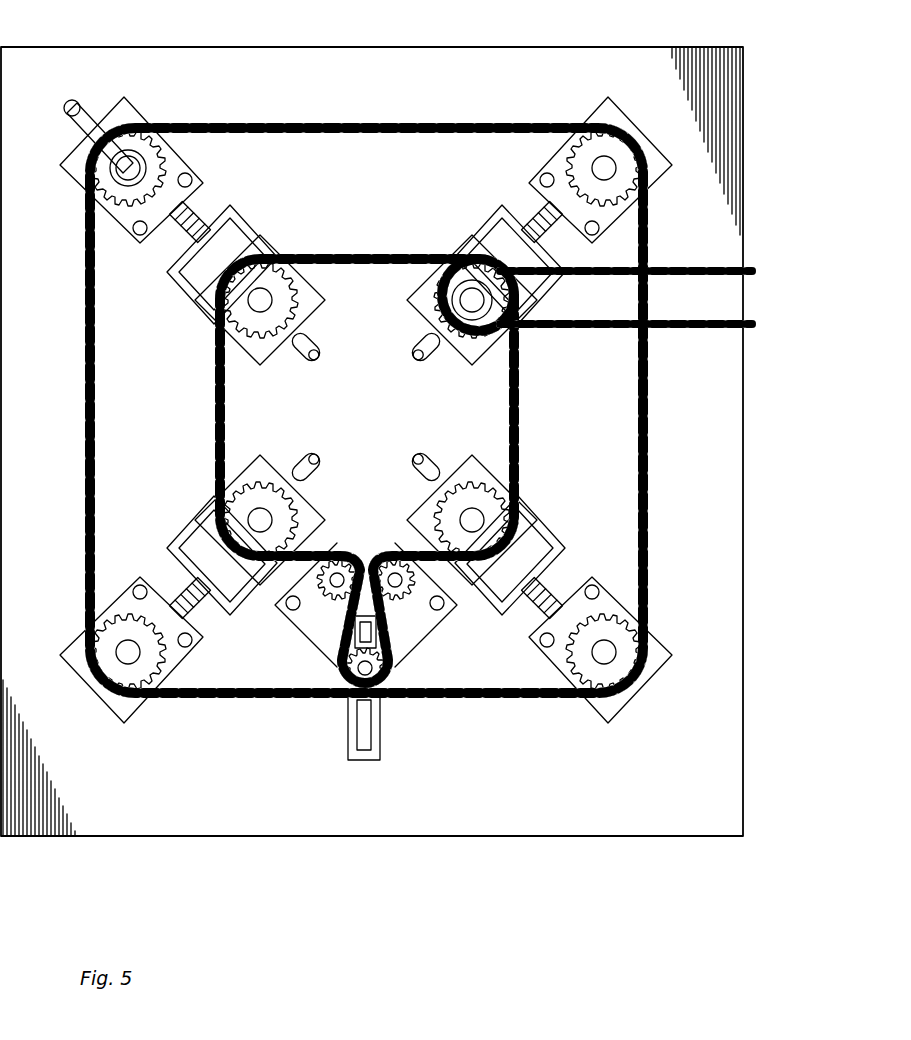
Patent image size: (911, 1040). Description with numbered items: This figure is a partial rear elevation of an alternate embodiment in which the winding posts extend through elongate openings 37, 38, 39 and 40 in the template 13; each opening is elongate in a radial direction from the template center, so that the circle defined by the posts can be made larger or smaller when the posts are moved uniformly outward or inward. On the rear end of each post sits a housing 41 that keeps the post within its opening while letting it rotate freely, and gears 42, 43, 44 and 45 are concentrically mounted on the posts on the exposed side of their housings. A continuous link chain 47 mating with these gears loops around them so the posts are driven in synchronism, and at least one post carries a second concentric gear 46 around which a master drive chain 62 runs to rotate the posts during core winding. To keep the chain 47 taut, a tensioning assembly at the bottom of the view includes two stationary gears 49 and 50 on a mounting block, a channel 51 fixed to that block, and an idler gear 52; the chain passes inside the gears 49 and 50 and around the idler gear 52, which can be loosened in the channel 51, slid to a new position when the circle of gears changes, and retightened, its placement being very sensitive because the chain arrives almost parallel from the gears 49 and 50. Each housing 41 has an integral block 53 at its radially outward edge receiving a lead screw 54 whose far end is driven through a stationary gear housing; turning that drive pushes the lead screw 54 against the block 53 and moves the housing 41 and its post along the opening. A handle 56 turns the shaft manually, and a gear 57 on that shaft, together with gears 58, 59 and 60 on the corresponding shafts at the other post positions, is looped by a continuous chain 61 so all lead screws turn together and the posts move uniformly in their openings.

The template 13 is at (720, 193).
The elongate opening 37 is at (318, 355).
The elongate opening 38 is at (428, 362).
The elongate opening 39 is at (420, 465).
The elongate opening 40 is at (318, 461).
The housing 41 is at (252, 255).
The gear 42 is at (278, 292).
The gear 43 is at (452, 312).
The gear 44 is at (497, 510).
The gear 45 is at (232, 520).
The second concentric gear 46 is at (450, 293).
The continuous link chain 47 is at (216, 432).
The stationary gear 49 is at (333, 598).
The stationary gear 50 is at (400, 595).
The channel 51 is at (382, 735).
The idler gear 52 is at (377, 664).
The integral block 53 is at (225, 235).
The lead screw 54 is at (200, 230).
The handle 56 is at (80, 100).
The gear 57 is at (135, 168).
The gear 58 is at (612, 150).
The gear 59 is at (620, 652).
The gear 60 is at (152, 652).
The continuous chain 61 is at (98, 408).
The master drive chain 62 is at (742, 322).